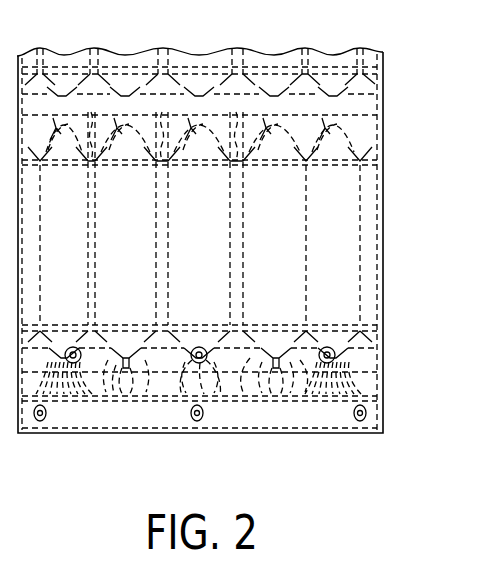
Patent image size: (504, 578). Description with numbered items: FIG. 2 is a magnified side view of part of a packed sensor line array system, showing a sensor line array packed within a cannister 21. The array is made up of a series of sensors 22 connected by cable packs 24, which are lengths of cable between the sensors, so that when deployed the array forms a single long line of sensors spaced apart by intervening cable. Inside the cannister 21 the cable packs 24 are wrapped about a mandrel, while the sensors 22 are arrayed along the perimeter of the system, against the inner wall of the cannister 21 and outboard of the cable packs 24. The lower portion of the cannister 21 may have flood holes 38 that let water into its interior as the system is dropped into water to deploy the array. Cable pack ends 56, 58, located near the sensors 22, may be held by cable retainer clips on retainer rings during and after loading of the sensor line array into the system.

The cannister 21 is at (385, 92).
The sensors 22 is at (322, 211).
The cable packs 24 is at (240, 265).
The flood holes 38 is at (60, 355).
The cable pack end 56 is at (283, 118).
The cable pack end 58 is at (347, 127).